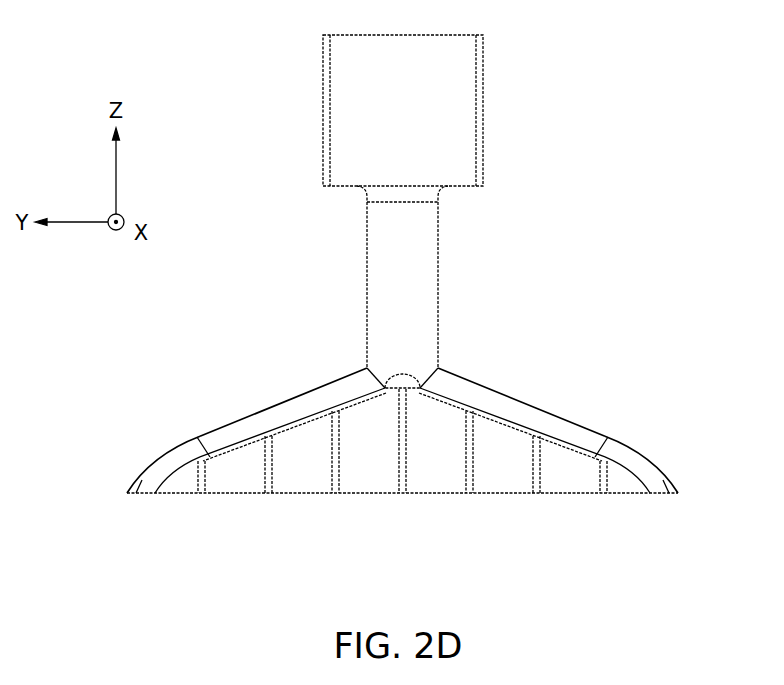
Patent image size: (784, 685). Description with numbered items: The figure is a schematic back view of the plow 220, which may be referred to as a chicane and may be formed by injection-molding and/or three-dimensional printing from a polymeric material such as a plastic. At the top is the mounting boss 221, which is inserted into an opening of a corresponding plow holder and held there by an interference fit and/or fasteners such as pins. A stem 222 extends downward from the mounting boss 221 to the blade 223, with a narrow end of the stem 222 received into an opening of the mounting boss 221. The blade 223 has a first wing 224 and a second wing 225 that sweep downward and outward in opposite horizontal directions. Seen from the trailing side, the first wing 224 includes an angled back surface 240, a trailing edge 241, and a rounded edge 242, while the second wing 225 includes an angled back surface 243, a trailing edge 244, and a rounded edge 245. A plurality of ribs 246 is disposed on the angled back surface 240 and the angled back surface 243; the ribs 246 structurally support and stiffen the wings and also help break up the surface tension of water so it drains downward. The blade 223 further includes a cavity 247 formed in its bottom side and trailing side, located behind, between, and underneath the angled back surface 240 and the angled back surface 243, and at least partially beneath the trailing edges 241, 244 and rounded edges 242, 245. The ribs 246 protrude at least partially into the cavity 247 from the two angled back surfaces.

The plow 220 is at (622, 165).
The mounting boss 221 is at (483, 72).
The stem 222 is at (414, 254).
The blade 223 is at (398, 460).
The first wing 224 is at (573, 401).
The second wing 225 is at (228, 403).
The angled back surface 240 is at (503, 465).
The trailing edge 241 is at (555, 422).
The rounded edge 242 is at (637, 457).
The angled back surface 243 is at (300, 467).
The trailing edge 244 is at (297, 413).
The rounded edge 245 is at (167, 470).
The ribs 246 is at (262, 474).
The cavity 247 is at (432, 458).